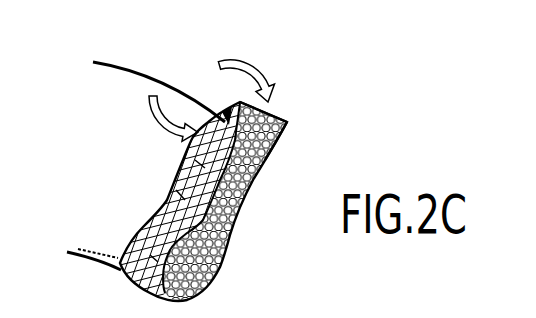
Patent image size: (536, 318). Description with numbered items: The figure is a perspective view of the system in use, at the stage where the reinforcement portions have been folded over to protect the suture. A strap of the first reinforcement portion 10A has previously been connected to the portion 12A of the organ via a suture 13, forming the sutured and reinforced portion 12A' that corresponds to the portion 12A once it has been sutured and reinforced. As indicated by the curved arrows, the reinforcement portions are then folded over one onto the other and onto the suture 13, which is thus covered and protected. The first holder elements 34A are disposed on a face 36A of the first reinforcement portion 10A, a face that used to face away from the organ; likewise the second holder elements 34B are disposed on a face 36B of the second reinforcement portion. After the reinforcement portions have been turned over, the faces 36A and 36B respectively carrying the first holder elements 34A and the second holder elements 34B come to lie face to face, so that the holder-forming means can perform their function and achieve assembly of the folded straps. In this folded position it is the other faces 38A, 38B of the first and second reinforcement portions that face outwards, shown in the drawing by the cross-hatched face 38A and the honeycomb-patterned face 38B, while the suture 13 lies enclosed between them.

The first reinforcement portion 10A is at (120, 274).
The portion of the organ 12A is at (158, 75).
The sutured and reinforced portion 12A' is at (73, 219).
The suture 13 is at (182, 210).
The first holder elements 34A is at (256, 62).
The second holder elements 34B is at (277, 115).
The face of the first reinforcement portion 36A is at (223, 107).
The face of the second reinforcement portion 36B is at (287, 123).
The other face of the first reinforcement portion 38A is at (202, 163).
The other face of the second reinforcement portion 38B is at (222, 265).